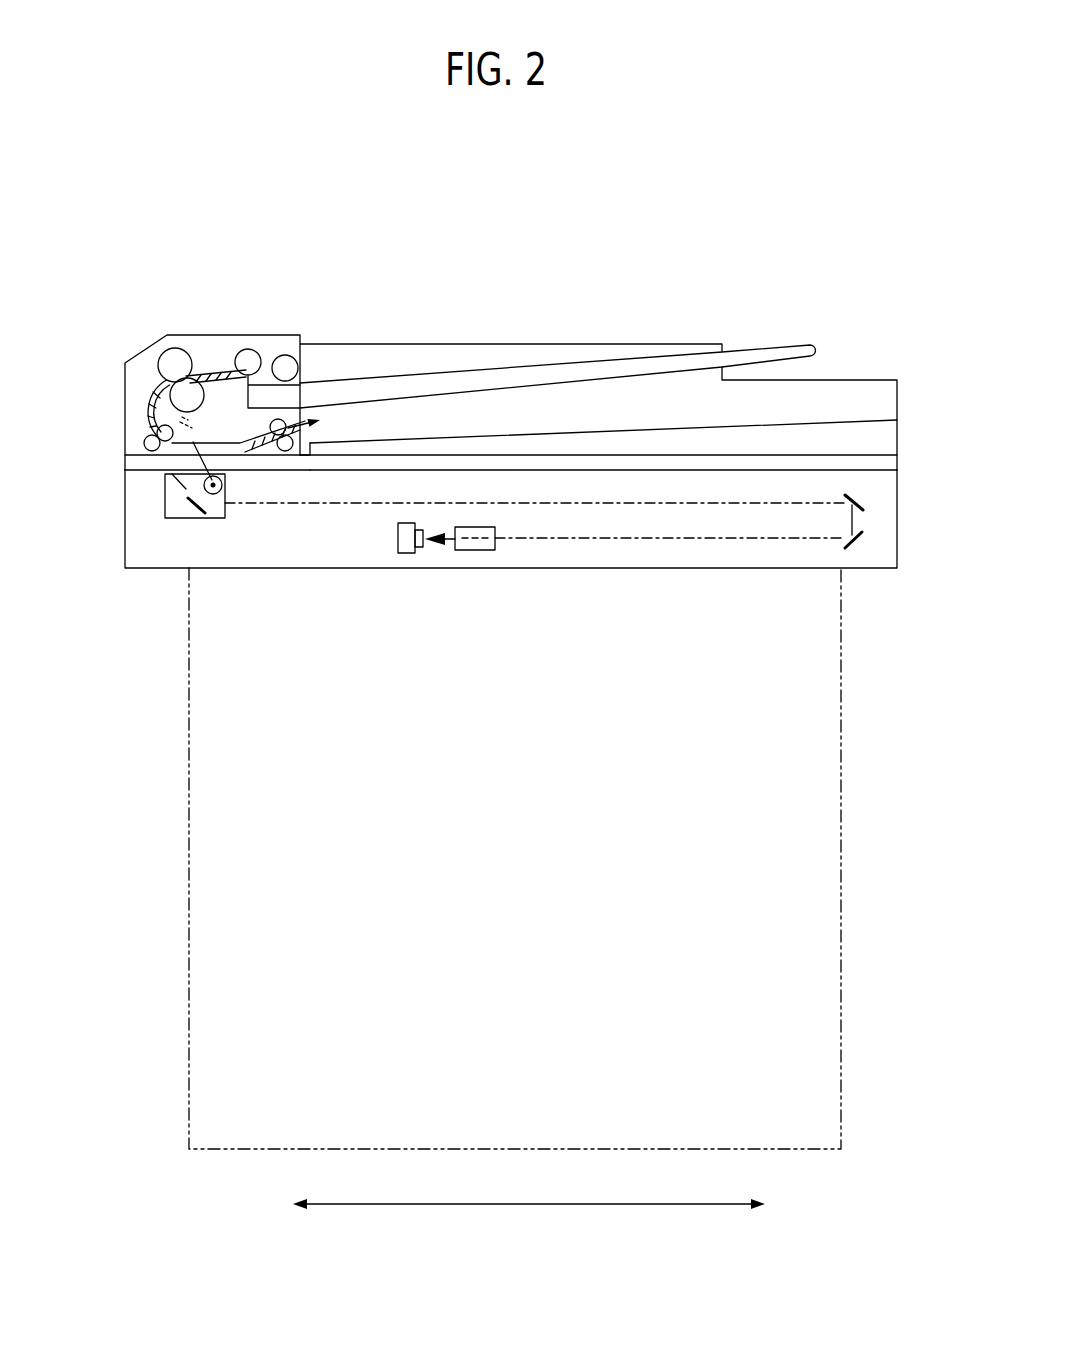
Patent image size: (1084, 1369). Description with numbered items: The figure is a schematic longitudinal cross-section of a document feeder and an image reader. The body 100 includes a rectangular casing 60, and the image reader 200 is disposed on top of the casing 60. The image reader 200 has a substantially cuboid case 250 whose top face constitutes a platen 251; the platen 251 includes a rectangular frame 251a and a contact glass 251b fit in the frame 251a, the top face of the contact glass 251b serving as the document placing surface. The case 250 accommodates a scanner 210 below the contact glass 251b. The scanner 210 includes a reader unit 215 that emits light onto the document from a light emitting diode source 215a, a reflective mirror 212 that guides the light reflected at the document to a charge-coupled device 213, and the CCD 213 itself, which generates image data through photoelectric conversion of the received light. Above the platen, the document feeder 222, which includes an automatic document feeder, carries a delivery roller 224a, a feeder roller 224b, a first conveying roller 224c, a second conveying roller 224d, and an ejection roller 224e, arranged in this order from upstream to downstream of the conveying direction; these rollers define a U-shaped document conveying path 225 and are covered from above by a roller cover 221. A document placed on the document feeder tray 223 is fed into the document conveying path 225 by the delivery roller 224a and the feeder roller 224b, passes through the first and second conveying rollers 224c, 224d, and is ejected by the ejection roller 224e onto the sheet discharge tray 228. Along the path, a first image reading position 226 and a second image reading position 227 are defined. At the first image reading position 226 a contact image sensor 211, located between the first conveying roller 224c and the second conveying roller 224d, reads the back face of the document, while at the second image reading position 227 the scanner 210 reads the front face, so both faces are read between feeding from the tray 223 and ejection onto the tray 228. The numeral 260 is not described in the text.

The image reader 200 is at (108, 262).
The roller cover 221 is at (230, 333).
The document feeder 222 is at (201, 321).
The document feeder tray 223 is at (402, 377).
The delivery roller 224a is at (290, 353).
The feeder roller 224b is at (268, 352).
The first conveying roller 224c is at (167, 336).
The second conveying roller 224d is at (126, 474).
The ejection roller 224e is at (320, 440).
The document conveying path 225 is at (148, 420).
The first image reading position 226 is at (148, 398).
The second image reading position 227 is at (148, 424).
The sheet discharge tray 228 is at (588, 430).
The contact image sensor 211 is at (178, 413).
The scanner 210 is at (135, 546).
The reflective mirror 212 is at (845, 500).
The charge-coupled device 213 is at (397, 540).
The reader unit 215 is at (205, 519).
The light emitting diode source 215a is at (224, 485).
The case 250 is at (908, 535).
The platen 251 is at (900, 465).
The rectangular frame 251a is at (790, 467).
The contact glass 251b is at (800, 457).
The upper unit 260 is at (898, 437).
The body 100 is at (847, 658).
The casing 60 is at (845, 700).